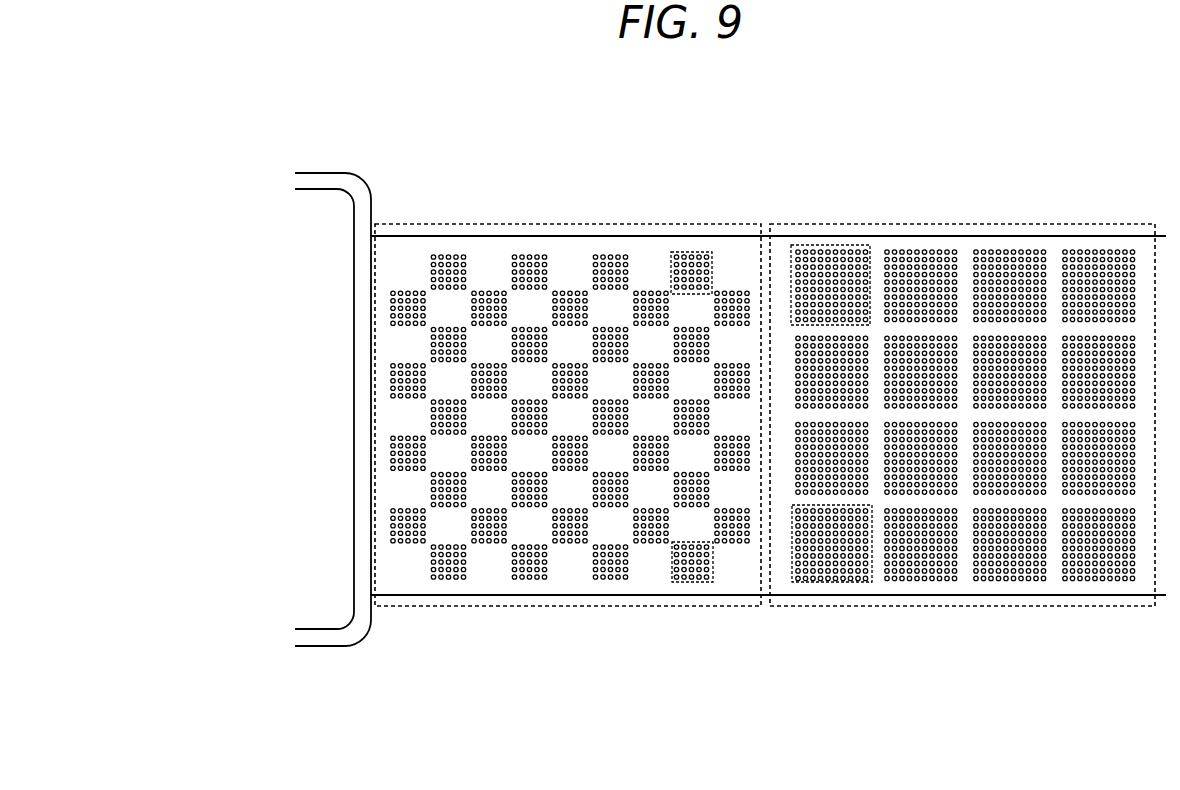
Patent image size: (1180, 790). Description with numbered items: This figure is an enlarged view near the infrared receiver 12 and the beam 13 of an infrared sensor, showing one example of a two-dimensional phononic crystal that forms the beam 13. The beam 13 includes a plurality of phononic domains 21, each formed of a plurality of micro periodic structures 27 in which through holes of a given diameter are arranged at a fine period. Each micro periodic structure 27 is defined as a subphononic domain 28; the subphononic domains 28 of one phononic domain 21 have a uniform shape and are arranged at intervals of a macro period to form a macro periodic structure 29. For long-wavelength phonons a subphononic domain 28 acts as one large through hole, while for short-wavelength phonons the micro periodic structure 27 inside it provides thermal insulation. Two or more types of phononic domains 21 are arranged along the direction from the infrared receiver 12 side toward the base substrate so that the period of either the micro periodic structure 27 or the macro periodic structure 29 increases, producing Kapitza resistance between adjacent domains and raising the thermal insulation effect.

The infrared receiver 12 is at (327, 182).
The beam 13 is at (418, 237).
The phononic domain 21 is at (1012, 235).
The micro periodic structure 27 is at (693, 253).
The subphononic domain 28 is at (833, 248).
The macro periodic structure 29 is at (693, 606).